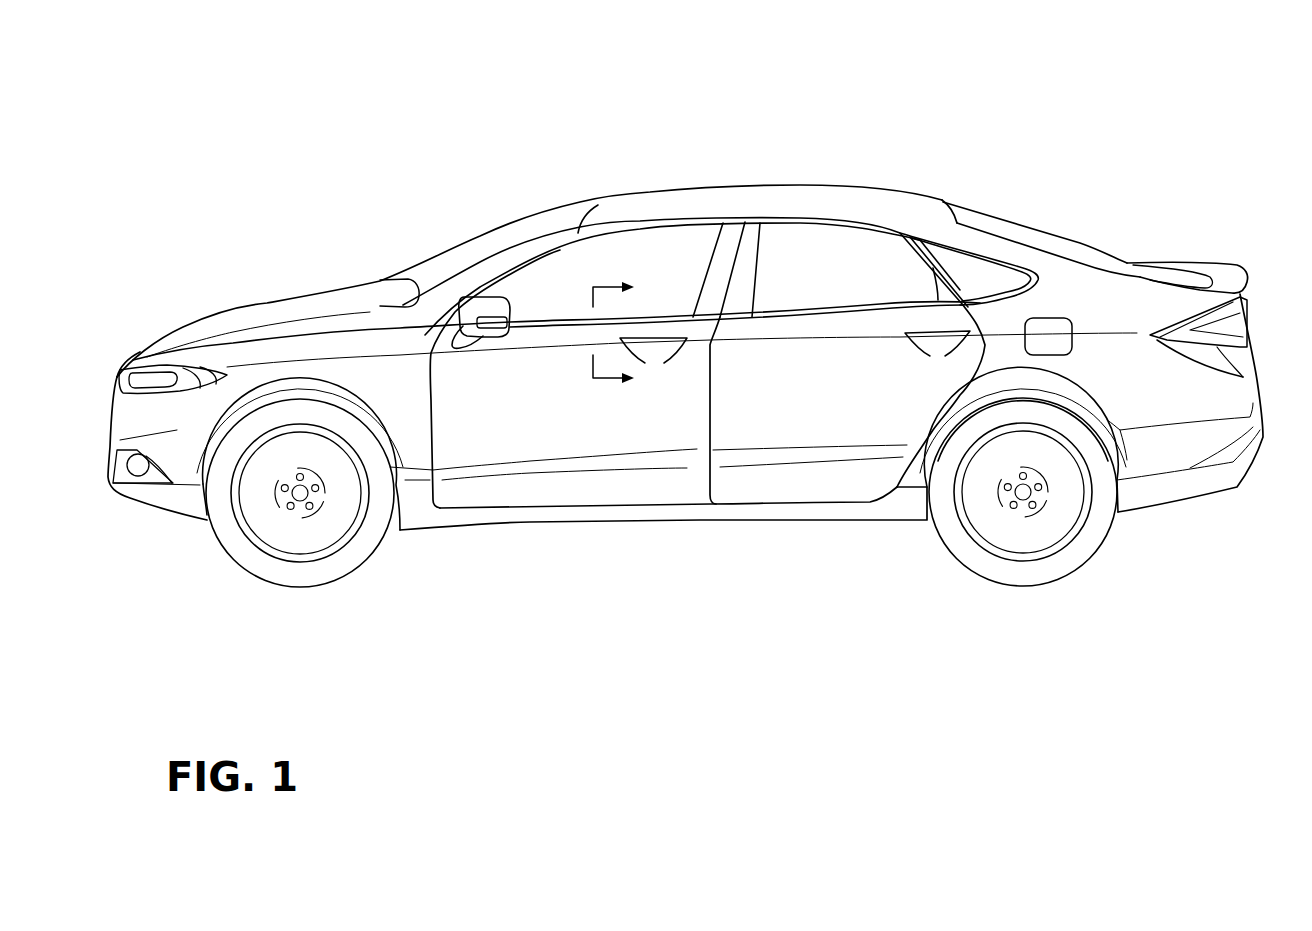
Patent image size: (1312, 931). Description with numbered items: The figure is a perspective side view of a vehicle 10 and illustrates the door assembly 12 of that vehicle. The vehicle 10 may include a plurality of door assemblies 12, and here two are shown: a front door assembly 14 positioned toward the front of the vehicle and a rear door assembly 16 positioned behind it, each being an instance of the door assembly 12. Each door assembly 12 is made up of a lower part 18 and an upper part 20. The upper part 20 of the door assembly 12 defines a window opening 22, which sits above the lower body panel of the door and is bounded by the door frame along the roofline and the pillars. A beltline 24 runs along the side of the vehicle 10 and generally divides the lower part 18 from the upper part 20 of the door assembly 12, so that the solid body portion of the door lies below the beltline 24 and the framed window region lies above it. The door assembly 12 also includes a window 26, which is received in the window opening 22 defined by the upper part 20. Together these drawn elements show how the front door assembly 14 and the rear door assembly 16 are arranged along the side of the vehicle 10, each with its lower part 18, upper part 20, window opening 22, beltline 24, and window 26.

The vehicle 10 is at (750, 124).
The door assembly 12 is at (546, 424).
The front door assembly 14 is at (575, 436).
The rear door assembly 16 is at (836, 426).
The lower part 18 is at (630, 425).
The upper part 20 is at (715, 258).
The window opening 22 is at (590, 263).
The beltline 24 is at (550, 310).
The window 26 is at (655, 245).